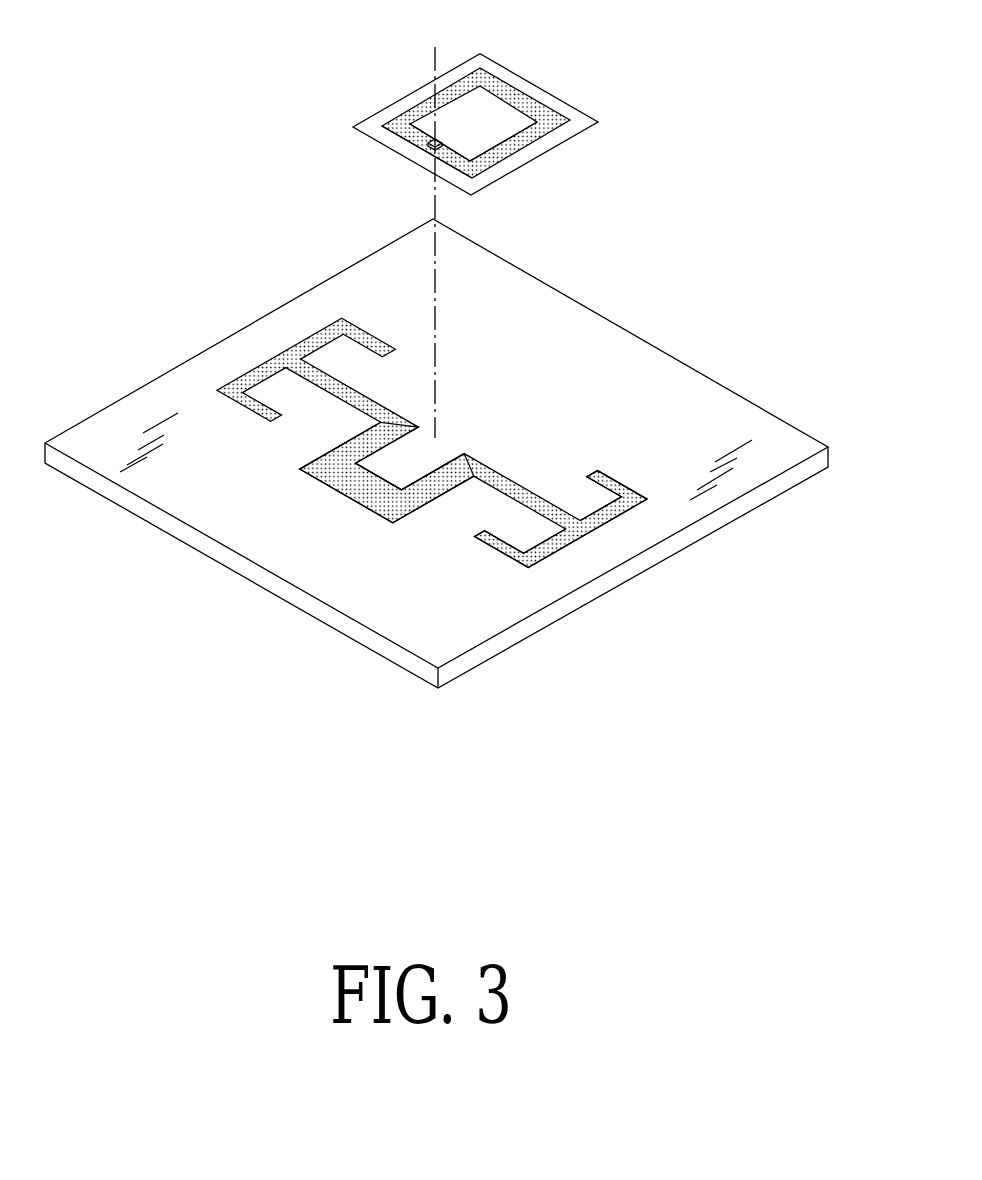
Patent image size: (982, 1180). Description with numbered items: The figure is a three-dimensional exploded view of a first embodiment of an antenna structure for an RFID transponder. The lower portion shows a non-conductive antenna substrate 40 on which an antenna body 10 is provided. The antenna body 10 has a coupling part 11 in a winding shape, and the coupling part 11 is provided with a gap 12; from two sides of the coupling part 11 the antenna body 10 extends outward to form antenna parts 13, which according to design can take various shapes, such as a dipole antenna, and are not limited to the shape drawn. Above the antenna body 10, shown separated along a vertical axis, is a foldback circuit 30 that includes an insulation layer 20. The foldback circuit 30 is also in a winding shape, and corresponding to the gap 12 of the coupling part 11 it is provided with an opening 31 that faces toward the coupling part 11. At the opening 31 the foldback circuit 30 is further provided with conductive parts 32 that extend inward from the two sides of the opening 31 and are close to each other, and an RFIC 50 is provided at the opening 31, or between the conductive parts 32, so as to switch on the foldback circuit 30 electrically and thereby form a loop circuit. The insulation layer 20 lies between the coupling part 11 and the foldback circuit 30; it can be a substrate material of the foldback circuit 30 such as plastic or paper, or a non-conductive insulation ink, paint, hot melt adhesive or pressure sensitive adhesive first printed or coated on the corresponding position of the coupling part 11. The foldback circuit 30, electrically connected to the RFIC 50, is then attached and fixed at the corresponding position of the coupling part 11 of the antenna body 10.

The antenna body 10 is at (342, 387).
The coupling part 11 is at (348, 483).
The gap 12 is at (412, 468).
The antenna parts 13 is at (627, 511).
The insulation layer 20 is at (537, 92).
The foldback circuit 30 is at (420, 103).
The opening 31 is at (470, 125).
The conductive parts 32 is at (430, 144).
The antenna substrate 40 is at (237, 357).
The RFIC 50 is at (447, 139).